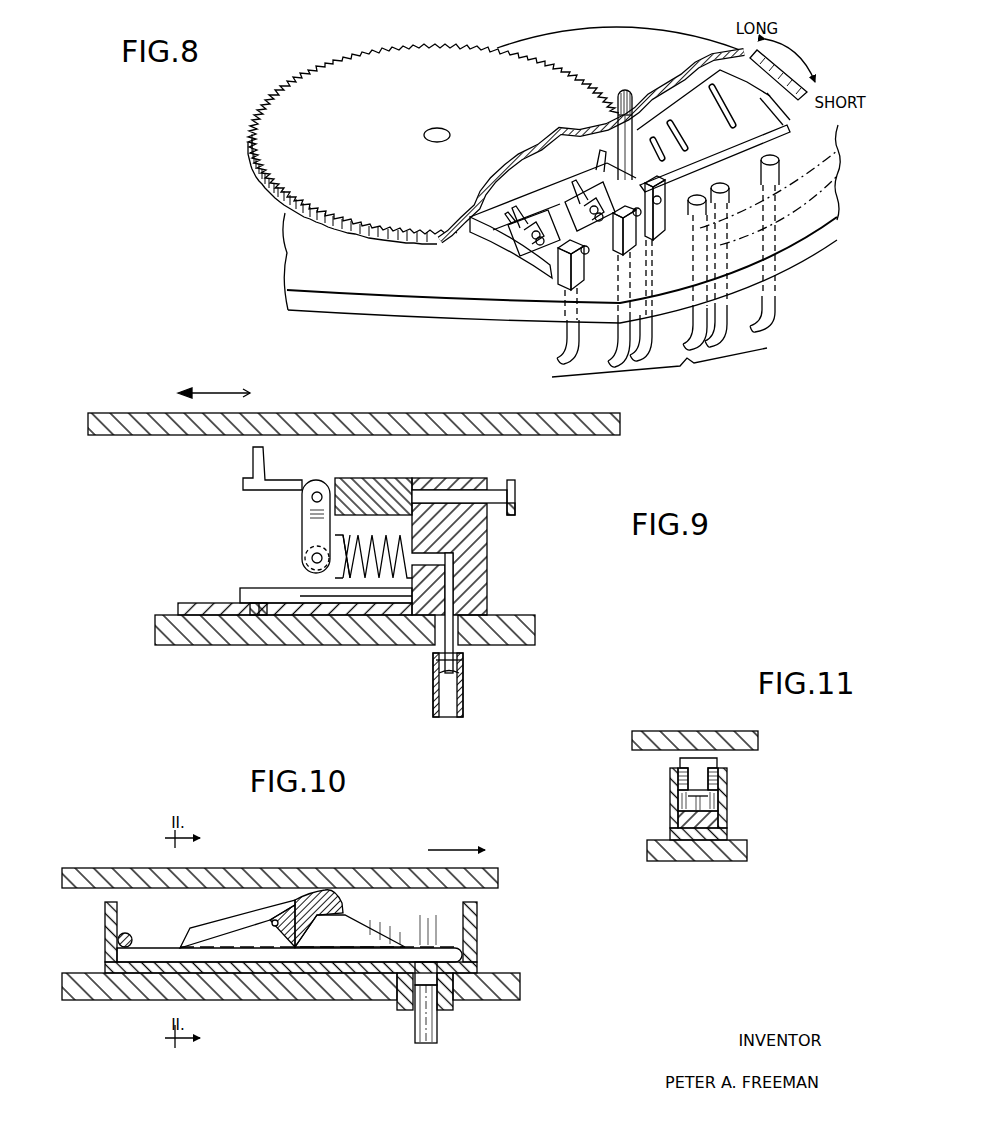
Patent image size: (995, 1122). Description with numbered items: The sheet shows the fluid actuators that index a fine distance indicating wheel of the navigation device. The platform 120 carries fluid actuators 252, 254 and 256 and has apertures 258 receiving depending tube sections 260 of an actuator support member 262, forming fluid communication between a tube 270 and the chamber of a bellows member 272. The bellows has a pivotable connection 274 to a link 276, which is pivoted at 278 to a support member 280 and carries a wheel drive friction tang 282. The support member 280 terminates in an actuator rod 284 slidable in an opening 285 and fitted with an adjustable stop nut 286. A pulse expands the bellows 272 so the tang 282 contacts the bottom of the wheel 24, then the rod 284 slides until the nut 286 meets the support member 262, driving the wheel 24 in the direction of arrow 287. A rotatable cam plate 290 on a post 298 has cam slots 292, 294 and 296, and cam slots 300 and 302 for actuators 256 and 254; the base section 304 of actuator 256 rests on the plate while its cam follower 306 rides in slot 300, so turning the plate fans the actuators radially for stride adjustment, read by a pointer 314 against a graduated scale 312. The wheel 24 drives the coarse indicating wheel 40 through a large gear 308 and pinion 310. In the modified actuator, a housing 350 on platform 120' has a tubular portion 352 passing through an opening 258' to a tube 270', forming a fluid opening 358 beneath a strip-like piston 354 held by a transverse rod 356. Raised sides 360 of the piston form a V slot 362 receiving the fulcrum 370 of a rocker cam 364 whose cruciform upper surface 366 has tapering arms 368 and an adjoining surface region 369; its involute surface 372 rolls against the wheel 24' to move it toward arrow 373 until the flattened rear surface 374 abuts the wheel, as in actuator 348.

In FIG. 8, the fine distance indicating wheel 24 is at (618, 27).
In FIG. 9, the fine distance indicating wheel 24 is at (354, 409).
In FIG. 10, the fine distance indicating wheel 24' is at (280, 853).
In FIG. 11, the fine distance indicating wheel 24' is at (695, 721).
In FIG. 8, the coarse indicating wheel 40 is at (365, 78).
In FIG. 8, the platform 120 is at (561, 240).
In FIG. 9, the platform 120 is at (345, 645).
In FIG. 10, the stationary platform 120' is at (291, 1000).
In FIG. 11, the stationary platform 120' is at (697, 871).
In FIG. 8, the fluid actuator 252 is at (656, 222).
In FIG. 8, the fluid actuator 254 is at (618, 243).
In FIG. 8, the fluid actuator 256 is at (558, 280).
In FIG. 9, the fluid actuator 256 is at (490, 602).
In FIG. 8, the aperture 258 is at (748, 222).
In FIG. 9, the aperture 258 is at (481, 613).
In FIG. 10, the opening 258' is at (462, 1014).
In FIG. 9, the tube section 260 is at (456, 672).
In FIG. 9, the actuator support member 262 is at (472, 547).
In FIG. 8, the tube 270 is at (663, 345).
In FIG. 9, the tube 270 is at (473, 690).
In FIG. 10, the tube 270' is at (431, 1069).
In FIG. 9, the bellows member 272 is at (368, 536).
In FIG. 9, the pivotable connection 274 is at (312, 562).
In FIG. 9, the link 276 is at (300, 538).
In FIG. 9, the pivot 278 is at (317, 492).
In FIG. 9, the support member 280 is at (372, 480).
In FIG. 9, the wheel drive friction tang 282 is at (255, 462).
In FIG. 9, the actuator rod 284 is at (493, 495).
In FIG. 9, the opening 285 is at (432, 492).
In FIG. 9, the adjustable stop nut 286 is at (512, 512).
In FIG. 9, the arrow 287 is at (221, 413).
In FIG. 8, the cam plate 290 is at (752, 136).
In FIG. 9, the cam plate 290 is at (188, 616).
In FIG. 8, the cam slot 292 is at (702, 188).
In FIG. 8, the cam slot 294 is at (683, 140).
In FIG. 8, the cam slot 296 is at (740, 130).
In FIG. 8, the post 298 is at (592, 120).
In FIG. 8, the cam slot 300 is at (478, 230).
In FIG. 9, the cam slot 300 is at (262, 620).
In FIG. 8, the cam slot 302 is at (568, 180).
In FIG. 9, the base section 304 is at (240, 592).
In FIG. 9, the cam follower 306 is at (257, 620).
In FIG. 8, the large gear 308 is at (437, 47).
In FIG. 8, the pinion 310 is at (616, 95).
In FIG. 8, the graduated scale 312 is at (787, 73).
In FIG. 8, the pointer 314 is at (790, 109).
In FIG. 10, the piston-rocker cam actuator 348 is at (103, 942).
In FIG. 10, the housing 350 is at (477, 930).
In FIG. 11, the housing 350 is at (728, 826).
In FIG. 10, the tubular portion 352 is at (440, 1028).
In FIG. 10, the piston 354 is at (262, 966).
In FIG. 11, the piston 354 is at (672, 829).
In FIG. 10, the transverse rod 356 is at (130, 934).
In FIG. 10, the fluid opening 358 is at (427, 973).
In FIG. 10, the raised sides 360 is at (252, 950).
In FIG. 11, the raised sides 360 is at (679, 816).
In FIG. 10, the V slot 362 is at (273, 926).
In FIG. 10, the rocker cam 364 is at (232, 912).
In FIG. 11, the rocker cam 364 is at (720, 796).
In FIG. 10, the upper surface 366 is at (296, 898).
In FIG. 11, the upper surface 366 is at (707, 762).
In FIG. 11, the arms 368 is at (676, 765).
In FIG. 10, the surface 369 is at (322, 896).
In FIG. 10, the fulcrum 370 is at (346, 916).
In FIG. 10, the involute surface 372 is at (343, 898).
In FIG. 11, the involute surface 372 is at (699, 757).
In FIG. 10, the arrow 373 is at (452, 849).
In FIG. 10, the flattened rear surface 374 is at (208, 926).
In FIG. 11, the flattened rear surface 374 is at (690, 788).